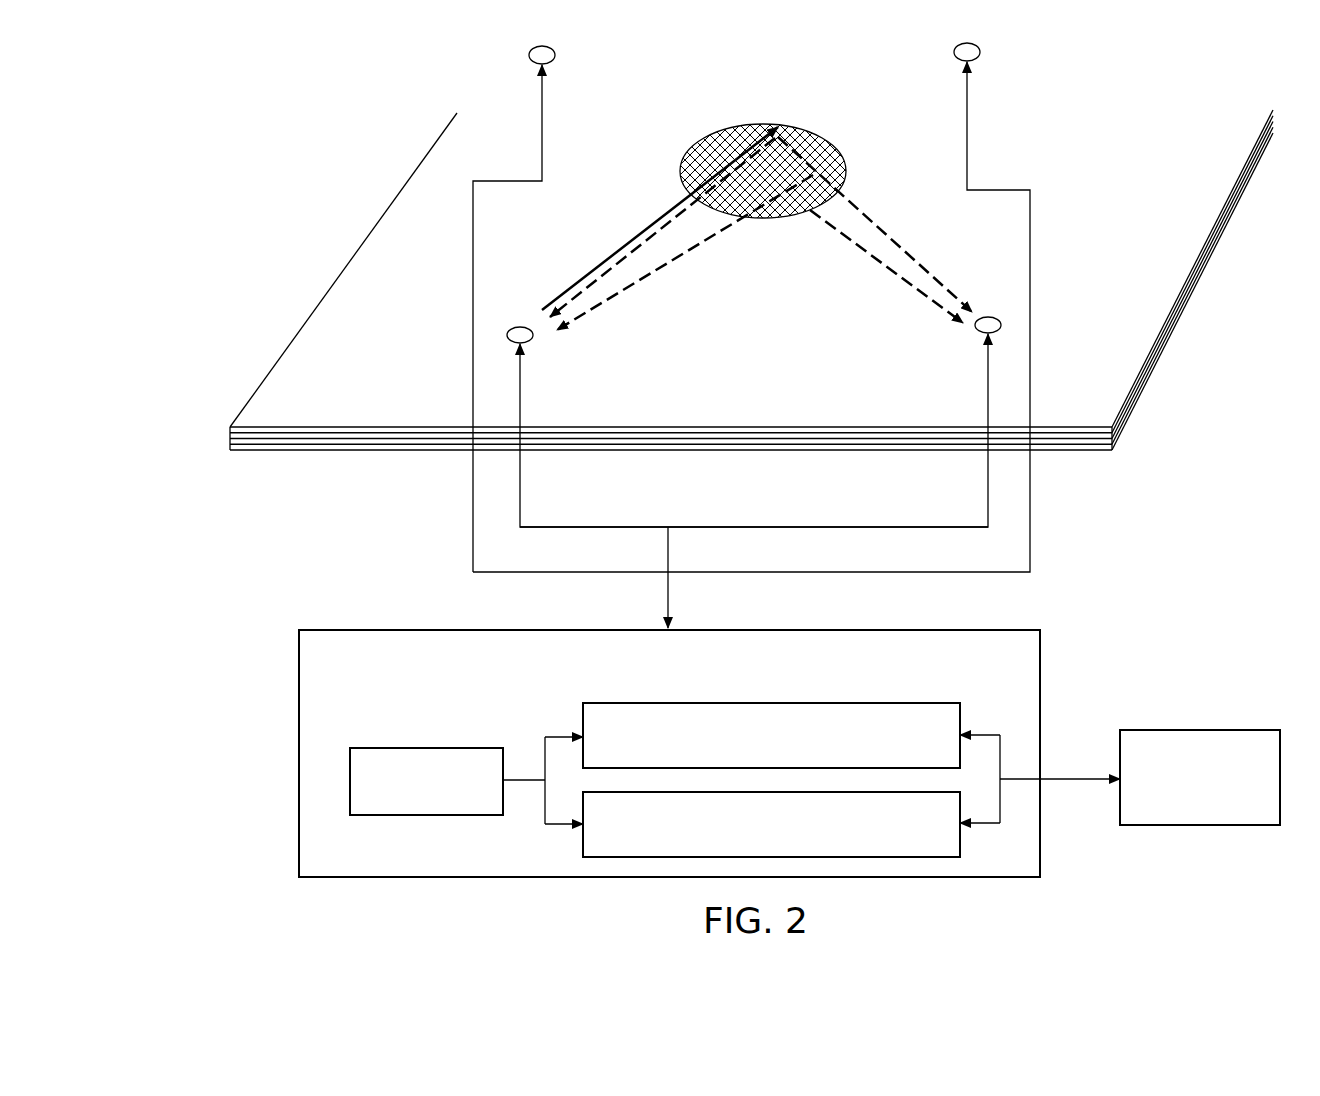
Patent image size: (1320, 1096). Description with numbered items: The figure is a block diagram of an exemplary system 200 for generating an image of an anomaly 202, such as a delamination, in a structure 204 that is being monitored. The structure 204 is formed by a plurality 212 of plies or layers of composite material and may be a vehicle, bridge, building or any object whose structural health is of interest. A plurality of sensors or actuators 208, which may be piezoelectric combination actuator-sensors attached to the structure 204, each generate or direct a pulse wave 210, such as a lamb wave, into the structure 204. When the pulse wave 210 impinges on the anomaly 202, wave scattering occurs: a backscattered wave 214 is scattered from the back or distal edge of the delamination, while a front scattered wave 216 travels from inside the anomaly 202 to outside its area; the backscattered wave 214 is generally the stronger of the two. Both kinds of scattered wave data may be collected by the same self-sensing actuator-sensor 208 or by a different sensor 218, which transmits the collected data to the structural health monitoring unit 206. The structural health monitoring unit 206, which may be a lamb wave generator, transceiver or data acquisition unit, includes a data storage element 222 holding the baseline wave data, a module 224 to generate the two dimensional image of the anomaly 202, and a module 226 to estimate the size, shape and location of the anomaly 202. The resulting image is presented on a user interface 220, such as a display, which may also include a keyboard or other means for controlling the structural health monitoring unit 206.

The system 200 is at (1199, 495).
The anomaly 202 is at (800, 124).
The structure 204 is at (1152, 171).
The structural health monitoring unit 206 is at (1041, 660).
The sensor or actuator 208 is at (556, 56).
The pulse wave 210 is at (647, 225).
The plurality of plies or layers 212 is at (230, 431).
The backscattered wave 214 is at (621, 276).
The front scattered wave 216 is at (681, 250).
The sensor 218 is at (981, 53).
The user interface 220 is at (1216, 730).
The data storage element 222 is at (418, 748).
The module to generate the two dimensional image 224 is at (583, 843).
The module to estimate size, shape and location 226 is at (950, 703).